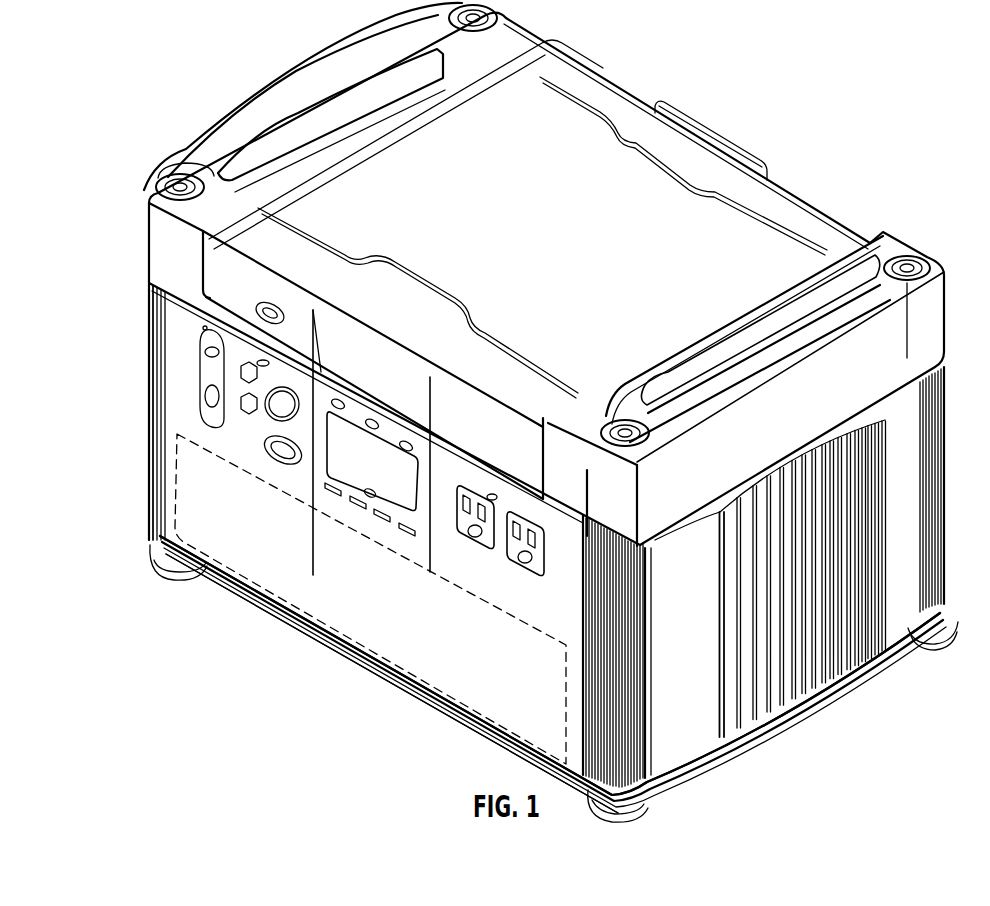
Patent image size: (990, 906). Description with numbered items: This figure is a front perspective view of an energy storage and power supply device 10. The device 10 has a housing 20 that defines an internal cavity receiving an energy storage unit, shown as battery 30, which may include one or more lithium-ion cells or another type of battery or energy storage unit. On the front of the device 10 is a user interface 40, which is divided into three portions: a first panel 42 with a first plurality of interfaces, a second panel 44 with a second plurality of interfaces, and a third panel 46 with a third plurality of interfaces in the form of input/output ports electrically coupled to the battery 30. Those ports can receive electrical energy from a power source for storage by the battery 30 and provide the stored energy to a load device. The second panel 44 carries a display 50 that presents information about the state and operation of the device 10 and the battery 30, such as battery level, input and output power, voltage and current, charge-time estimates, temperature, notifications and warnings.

The energy storage and power supply device 10 is at (928, 104).
The housing 20 is at (164, 440).
The battery 30 is at (450, 700).
The user interface 40 is at (580, 633).
The first panel 42 is at (492, 598).
The second panel 44 is at (357, 520).
The third panel 46 is at (250, 458).
The display 50 is at (347, 460).